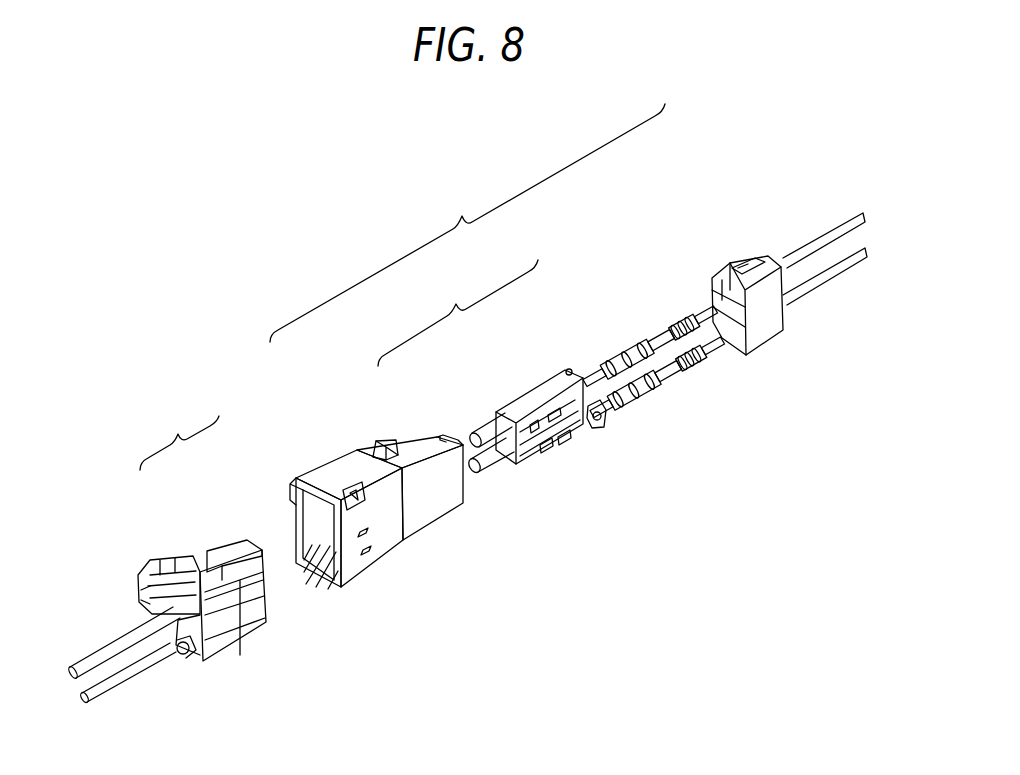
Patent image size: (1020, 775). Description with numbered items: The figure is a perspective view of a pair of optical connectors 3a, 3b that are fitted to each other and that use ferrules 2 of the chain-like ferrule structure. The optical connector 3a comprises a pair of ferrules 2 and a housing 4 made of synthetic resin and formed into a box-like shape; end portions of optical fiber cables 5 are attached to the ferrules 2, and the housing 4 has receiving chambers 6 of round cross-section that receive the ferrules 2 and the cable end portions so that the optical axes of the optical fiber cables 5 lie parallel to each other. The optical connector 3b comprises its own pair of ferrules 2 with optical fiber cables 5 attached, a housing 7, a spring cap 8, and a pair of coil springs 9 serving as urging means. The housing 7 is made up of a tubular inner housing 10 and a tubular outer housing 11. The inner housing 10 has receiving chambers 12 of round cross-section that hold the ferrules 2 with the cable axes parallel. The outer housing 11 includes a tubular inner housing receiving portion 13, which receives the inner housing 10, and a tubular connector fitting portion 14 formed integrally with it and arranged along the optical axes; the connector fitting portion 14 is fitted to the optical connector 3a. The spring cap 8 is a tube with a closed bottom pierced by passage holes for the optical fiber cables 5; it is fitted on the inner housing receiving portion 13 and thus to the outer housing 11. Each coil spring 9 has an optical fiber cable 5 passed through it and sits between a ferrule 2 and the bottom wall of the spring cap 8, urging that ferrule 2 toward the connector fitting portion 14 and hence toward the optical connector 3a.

The ferrule 2 is at (611, 348).
The optical connector 3a is at (179, 437).
The optical connector 3b is at (467, 223).
The housing 4 is at (213, 533).
The optical fiber cable 5 is at (117, 634).
The receiving chamber 6 is at (138, 596).
The housing 7 is at (458, 313).
The spring cap 8 is at (740, 246).
The coil spring 9 is at (678, 308).
The inner housing 10 is at (531, 378).
The outer housing 11 is at (381, 433).
The receiving chamber 12 is at (597, 430).
The inner housing receiving portion 13 is at (423, 507).
The connector fitting portion 14 is at (362, 566).